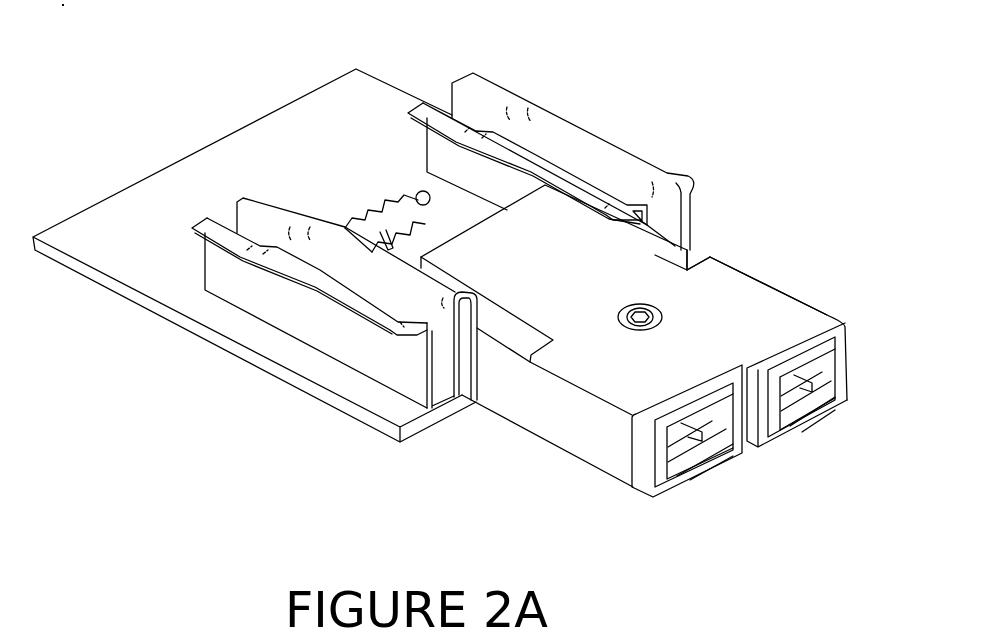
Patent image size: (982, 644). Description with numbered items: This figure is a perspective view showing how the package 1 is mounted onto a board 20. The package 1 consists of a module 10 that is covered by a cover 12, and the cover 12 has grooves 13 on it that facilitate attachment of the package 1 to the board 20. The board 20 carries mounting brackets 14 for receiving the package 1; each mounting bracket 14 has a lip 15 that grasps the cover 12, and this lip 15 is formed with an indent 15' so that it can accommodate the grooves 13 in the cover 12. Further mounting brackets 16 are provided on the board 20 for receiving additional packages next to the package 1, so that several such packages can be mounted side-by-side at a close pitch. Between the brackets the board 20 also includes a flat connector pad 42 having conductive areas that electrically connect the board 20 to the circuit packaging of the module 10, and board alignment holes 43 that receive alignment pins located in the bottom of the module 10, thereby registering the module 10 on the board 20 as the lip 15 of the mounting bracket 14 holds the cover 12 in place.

The package 1 is at (737, 258).
The module 10 is at (850, 348).
The cover 12 is at (762, 280).
The grooves 13 is at (685, 252).
The mounting brackets 14 is at (417, 233).
The lip 15 is at (541, 152).
The indent 15' is at (309, 245).
The mounting brackets 16 is at (192, 224).
The board 20 is at (333, 86).
The flat connector pad 42 is at (362, 208).
The board alignment holes 43 is at (417, 192).